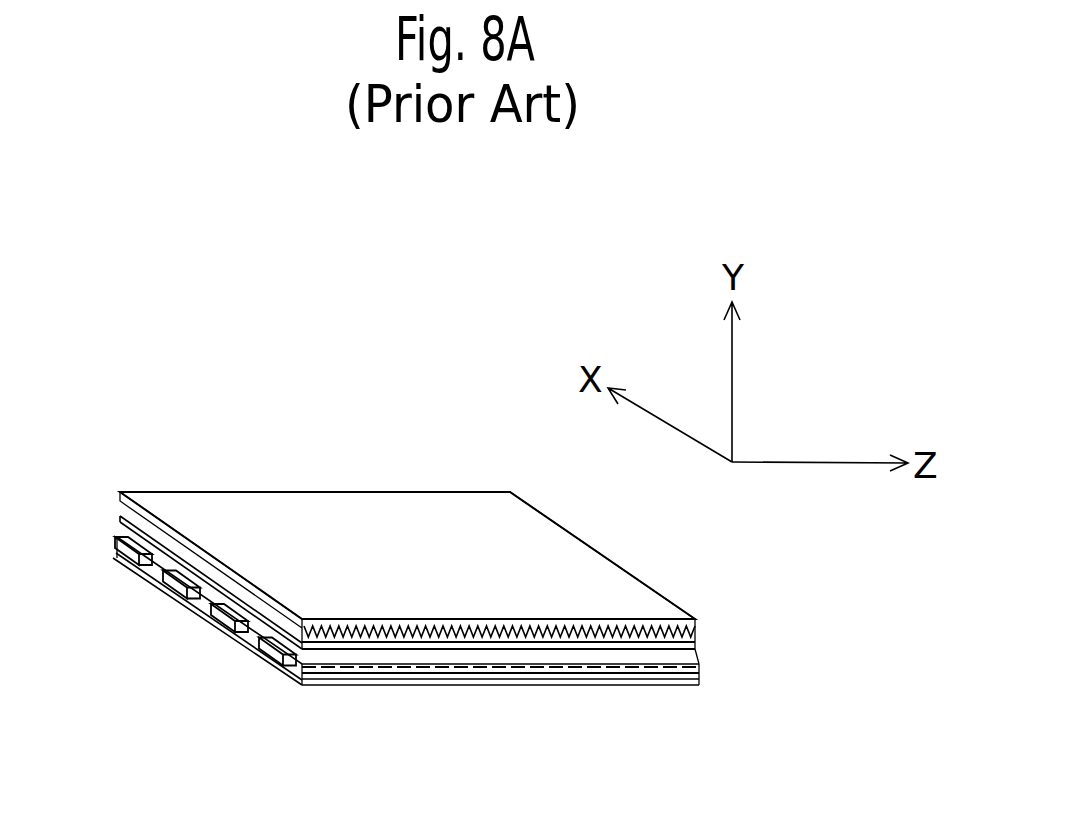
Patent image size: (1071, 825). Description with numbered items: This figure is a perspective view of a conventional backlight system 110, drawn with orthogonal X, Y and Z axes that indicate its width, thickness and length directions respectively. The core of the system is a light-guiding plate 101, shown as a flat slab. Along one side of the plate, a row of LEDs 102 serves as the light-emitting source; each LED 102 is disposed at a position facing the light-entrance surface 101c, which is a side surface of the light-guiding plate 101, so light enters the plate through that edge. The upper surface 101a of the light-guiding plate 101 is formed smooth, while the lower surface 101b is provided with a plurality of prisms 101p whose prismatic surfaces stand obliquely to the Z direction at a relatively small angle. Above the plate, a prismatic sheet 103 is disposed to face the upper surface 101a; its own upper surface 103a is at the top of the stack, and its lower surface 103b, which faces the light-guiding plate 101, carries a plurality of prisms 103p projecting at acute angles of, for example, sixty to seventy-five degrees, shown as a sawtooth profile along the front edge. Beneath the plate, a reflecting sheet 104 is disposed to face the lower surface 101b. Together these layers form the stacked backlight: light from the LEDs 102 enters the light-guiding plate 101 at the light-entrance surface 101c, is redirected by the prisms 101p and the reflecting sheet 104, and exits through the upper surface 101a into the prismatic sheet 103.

The backlight system 110 is at (316, 458).
The light-guiding plate 101 is at (683, 665).
The upper surface 101a is at (700, 647).
The lower surface 101b is at (617, 668).
The light-entrance surface 101c is at (115, 528).
The prisms 101p is at (520, 670).
The LED 102 is at (268, 652).
The prismatic sheet 103 is at (587, 542).
The upper surface of the prismatic sheet 103a is at (385, 513).
The lower surface of the prismatic sheet 103b is at (607, 632).
The prisms 103p is at (662, 638).
The reflecting sheet 104 is at (352, 685).